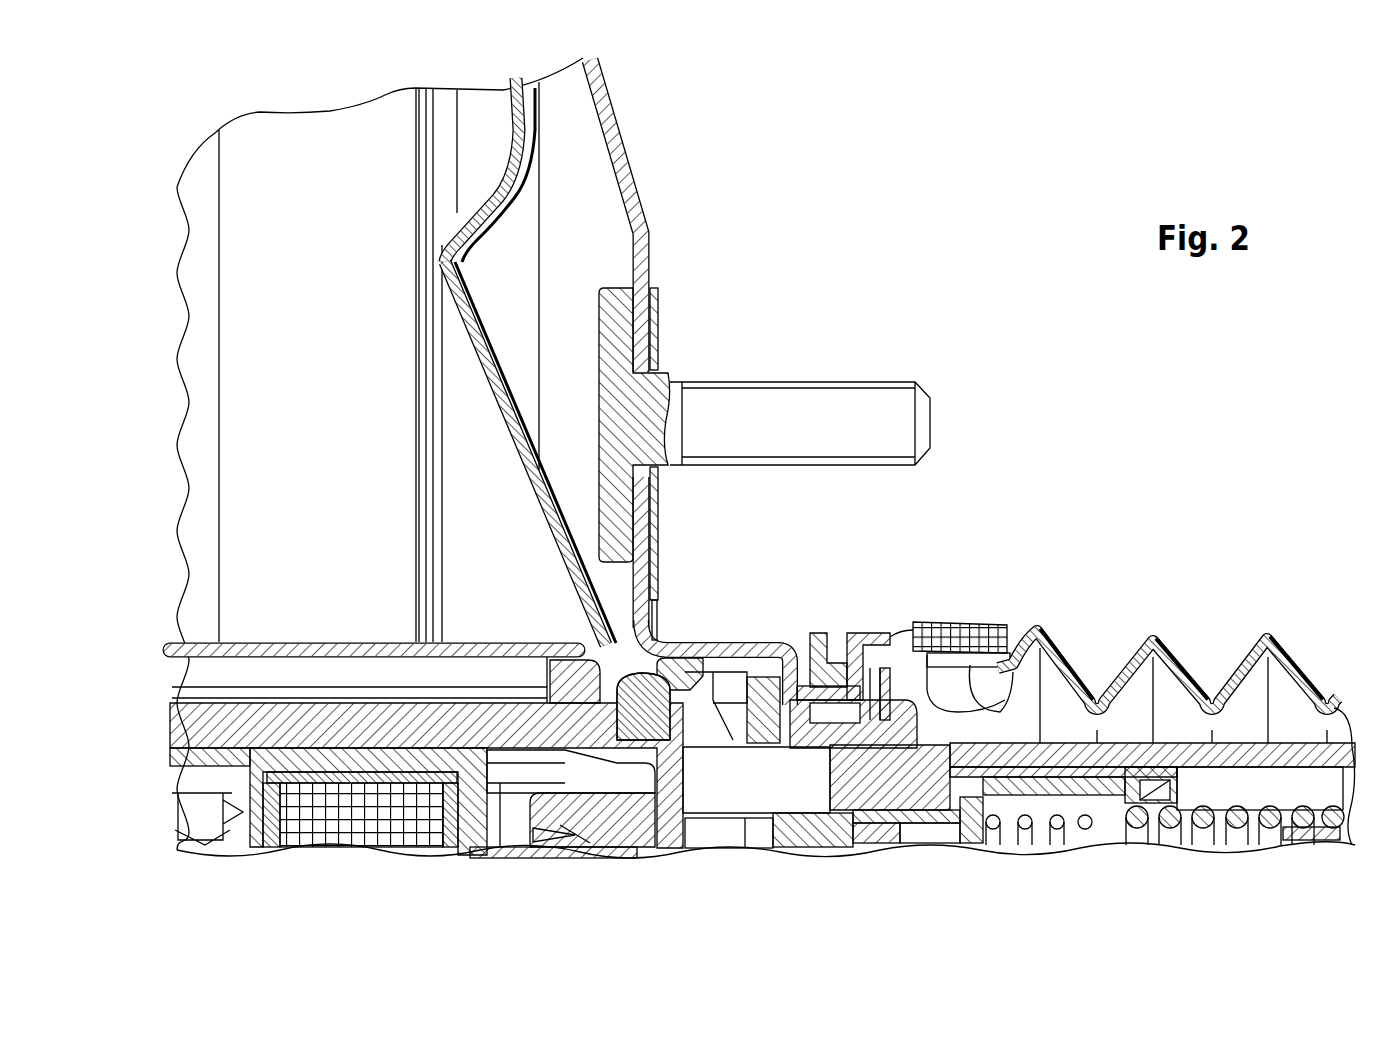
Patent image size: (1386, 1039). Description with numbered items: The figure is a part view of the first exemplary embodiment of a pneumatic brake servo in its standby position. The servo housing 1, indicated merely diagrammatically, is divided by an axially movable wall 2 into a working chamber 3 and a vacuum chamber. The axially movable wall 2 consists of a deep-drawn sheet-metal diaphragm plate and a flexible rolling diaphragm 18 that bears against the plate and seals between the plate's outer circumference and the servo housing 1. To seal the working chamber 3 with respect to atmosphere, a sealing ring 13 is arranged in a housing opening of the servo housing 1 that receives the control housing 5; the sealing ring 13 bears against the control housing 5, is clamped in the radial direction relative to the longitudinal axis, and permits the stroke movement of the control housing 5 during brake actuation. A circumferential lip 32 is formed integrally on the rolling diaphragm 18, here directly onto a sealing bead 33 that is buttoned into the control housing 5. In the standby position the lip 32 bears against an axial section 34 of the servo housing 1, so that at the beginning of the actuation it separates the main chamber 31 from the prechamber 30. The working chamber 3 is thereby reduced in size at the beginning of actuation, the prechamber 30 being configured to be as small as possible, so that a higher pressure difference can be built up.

The servo housing 1 is at (632, 138).
The axially movable wall 2 is at (545, 100).
The working chamber 3 is at (583, 241).
The control housing 5 is at (1062, 757).
The sealing ring 13 is at (888, 728).
The rolling diaphragm 18 is at (478, 313).
The prechamber 30 is at (693, 692).
The main chamber 31 is at (580, 497).
The lip 32 is at (713, 657).
The sealing bead 33 is at (633, 708).
The axial section 34 is at (757, 645).